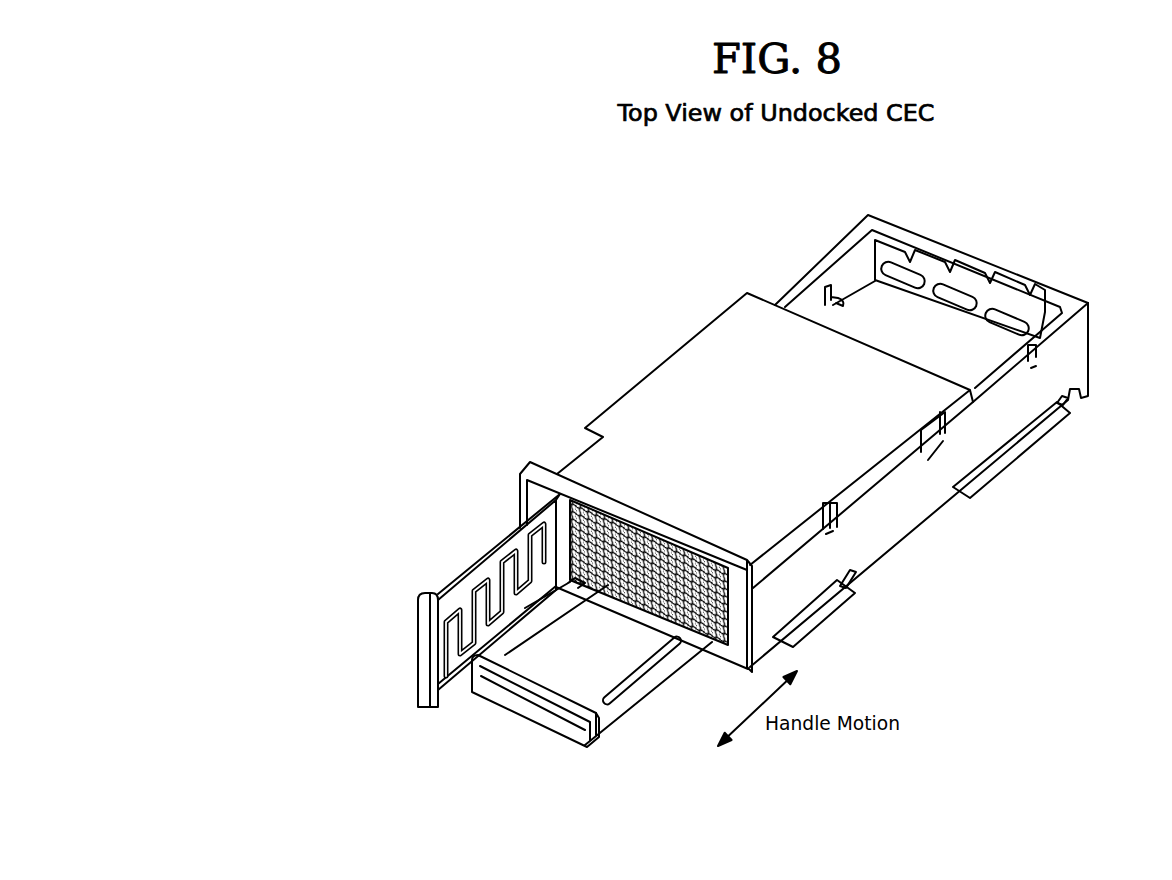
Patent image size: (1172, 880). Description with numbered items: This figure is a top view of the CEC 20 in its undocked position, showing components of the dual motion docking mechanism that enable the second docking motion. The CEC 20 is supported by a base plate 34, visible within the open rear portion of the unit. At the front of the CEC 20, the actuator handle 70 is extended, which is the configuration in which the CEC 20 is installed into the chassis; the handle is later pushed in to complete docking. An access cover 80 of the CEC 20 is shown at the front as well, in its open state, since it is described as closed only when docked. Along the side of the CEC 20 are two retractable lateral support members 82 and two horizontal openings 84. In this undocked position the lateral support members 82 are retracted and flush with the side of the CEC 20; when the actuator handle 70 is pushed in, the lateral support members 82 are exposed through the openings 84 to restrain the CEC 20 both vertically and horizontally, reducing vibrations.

The CEC 20 is at (530, 169).
The base plate 34 is at (912, 328).
The actuator handle 70 is at (533, 723).
The access cover 80 is at (488, 555).
The retractable lateral support members 82 is at (850, 581).
The horizontal openings 84 is at (822, 625).